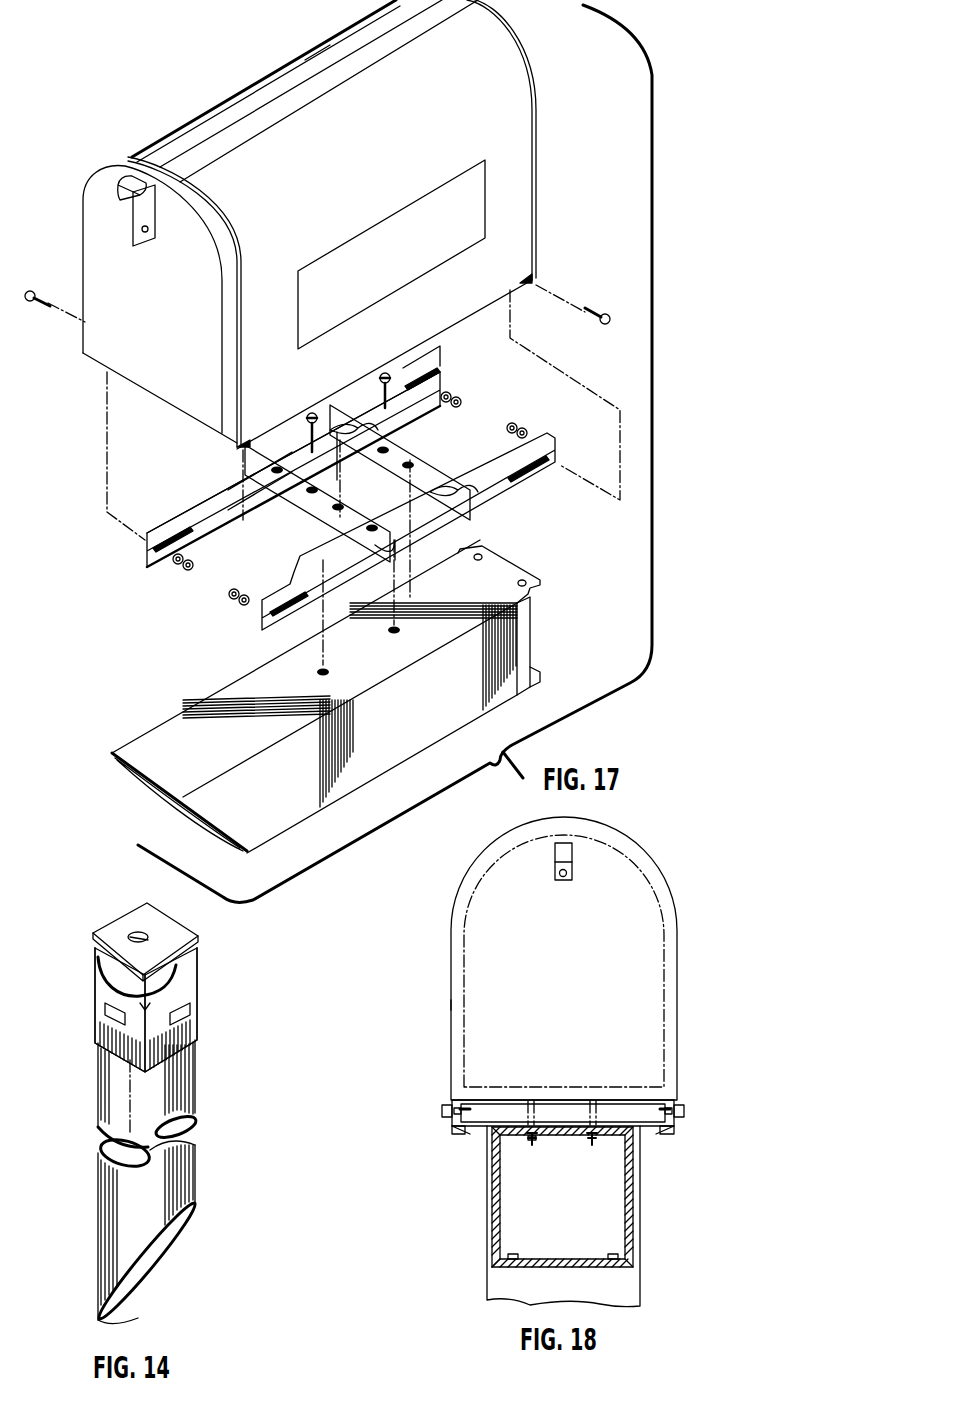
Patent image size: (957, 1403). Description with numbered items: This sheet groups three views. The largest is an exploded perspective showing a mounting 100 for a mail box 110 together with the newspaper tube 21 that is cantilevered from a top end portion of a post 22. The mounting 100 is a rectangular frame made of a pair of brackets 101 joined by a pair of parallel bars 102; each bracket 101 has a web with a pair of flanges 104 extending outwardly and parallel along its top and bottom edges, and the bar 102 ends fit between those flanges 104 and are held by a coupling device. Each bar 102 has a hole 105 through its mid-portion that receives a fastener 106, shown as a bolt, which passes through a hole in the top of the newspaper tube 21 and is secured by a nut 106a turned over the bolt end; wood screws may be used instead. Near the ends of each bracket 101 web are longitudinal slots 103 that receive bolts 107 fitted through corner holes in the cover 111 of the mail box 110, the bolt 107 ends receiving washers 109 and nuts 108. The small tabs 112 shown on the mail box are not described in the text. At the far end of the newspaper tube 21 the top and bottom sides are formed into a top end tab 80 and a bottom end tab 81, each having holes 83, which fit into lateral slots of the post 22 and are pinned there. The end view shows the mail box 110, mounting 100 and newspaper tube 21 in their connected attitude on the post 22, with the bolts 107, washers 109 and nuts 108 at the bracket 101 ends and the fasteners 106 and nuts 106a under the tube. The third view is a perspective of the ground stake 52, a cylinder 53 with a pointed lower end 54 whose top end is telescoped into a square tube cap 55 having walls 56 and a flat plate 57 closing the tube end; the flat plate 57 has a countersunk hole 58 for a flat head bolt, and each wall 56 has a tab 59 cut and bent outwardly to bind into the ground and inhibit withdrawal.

In FIG. 17, the mail box 110 is at (205, 72).
In FIG. 18, the mail box 110 is at (688, 978).
In FIG. 17, the cover 111 is at (318, 80).
In FIG. 18, the cover 111 is at (452, 1000).
In FIG. 17, the mounting tab 112 is at (532, 268).
In FIG. 17, the bolt 107 is at (38, 290).
In FIG. 18, the bolt 107 is at (680, 1115).
In FIG. 17, the bracket 101 is at (285, 482).
In FIG. 18, the bracket 101 is at (458, 1124).
In FIG. 17, the longitudinal slot 103 is at (430, 372).
In FIG. 17, the flange 104 is at (285, 498).
In FIG. 18, the flange 104 is at (655, 1104).
In FIG. 17, the parallel bar 102 is at (418, 470).
In FIG. 18, the parallel bar 102 is at (565, 1112).
In FIG. 17, the hole 105 is at (402, 452).
In FIG. 17, the fastener 106 is at (382, 380).
In FIG. 18, the fastener 106 is at (528, 1140).
In FIG. 18, the nut 106a is at (538, 1140).
In FIG. 17, the nut 108 is at (458, 405).
In FIG. 18, the nut 108 is at (673, 1110).
In FIG. 17, the washer 109 is at (448, 396).
In FIG. 17, the mounting 100 is at (165, 656).
In FIG. 17, the newspaper tube 21 is at (415, 727).
In FIG. 18, the newspaper tube 21 is at (634, 1176).
In FIG. 18, the post 22 is at (625, 1294).
In FIG. 17, the top end tab 80 is at (530, 562).
In FIG. 17, the hole 83 is at (484, 552).
In FIG. 17, the bottom end tab 81 is at (542, 673).
In FIG. 14, the ground stake 52 is at (198, 1089).
In FIG. 14, the cylinder 53 is at (128, 1103).
In FIG. 14, the pointed lower end 54 is at (140, 1323).
In FIG. 14, the cap 55 is at (190, 968).
In FIG. 14, the wall 56 is at (100, 1025).
In FIG. 14, the flat plate 57 is at (162, 920).
In FIG. 14, the hole 58 is at (133, 932).
In FIG. 14, the tab 59 is at (186, 1013).